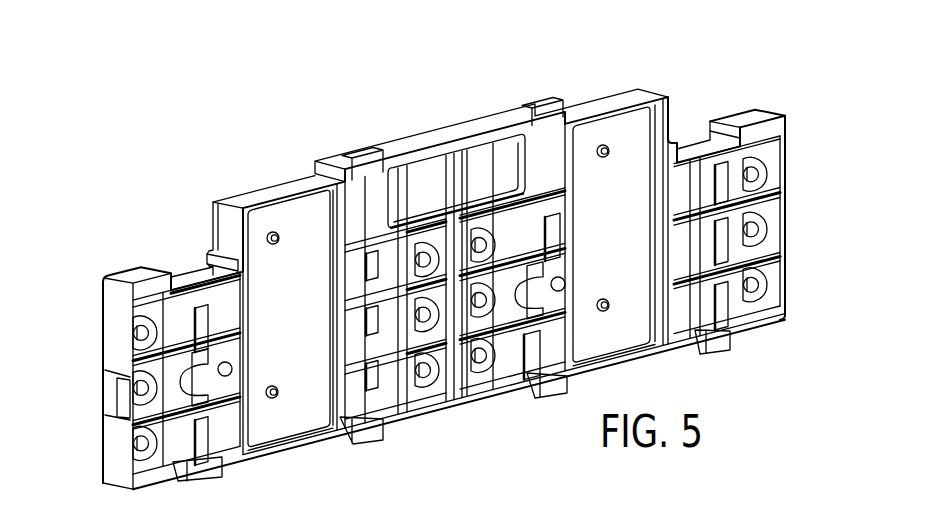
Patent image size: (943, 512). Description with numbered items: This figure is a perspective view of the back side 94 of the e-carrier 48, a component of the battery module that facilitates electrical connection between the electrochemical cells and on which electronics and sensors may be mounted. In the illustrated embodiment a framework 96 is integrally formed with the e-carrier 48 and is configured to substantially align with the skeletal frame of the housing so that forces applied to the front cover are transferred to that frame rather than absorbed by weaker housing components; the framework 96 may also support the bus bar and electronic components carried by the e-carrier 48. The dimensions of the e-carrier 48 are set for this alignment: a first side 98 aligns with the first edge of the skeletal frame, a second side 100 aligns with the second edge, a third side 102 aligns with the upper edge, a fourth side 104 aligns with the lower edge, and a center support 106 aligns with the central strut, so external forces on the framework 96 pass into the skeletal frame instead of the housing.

The e-carrier 48 is at (440, 258).
The back side 94 is at (802, 160).
The framework 96 is at (788, 112).
The first side 98 is at (784, 300).
The second side 100 is at (131, 341).
The third side 102 is at (215, 250).
The fourth side 104 is at (495, 396).
The center support 106 is at (458, 396).